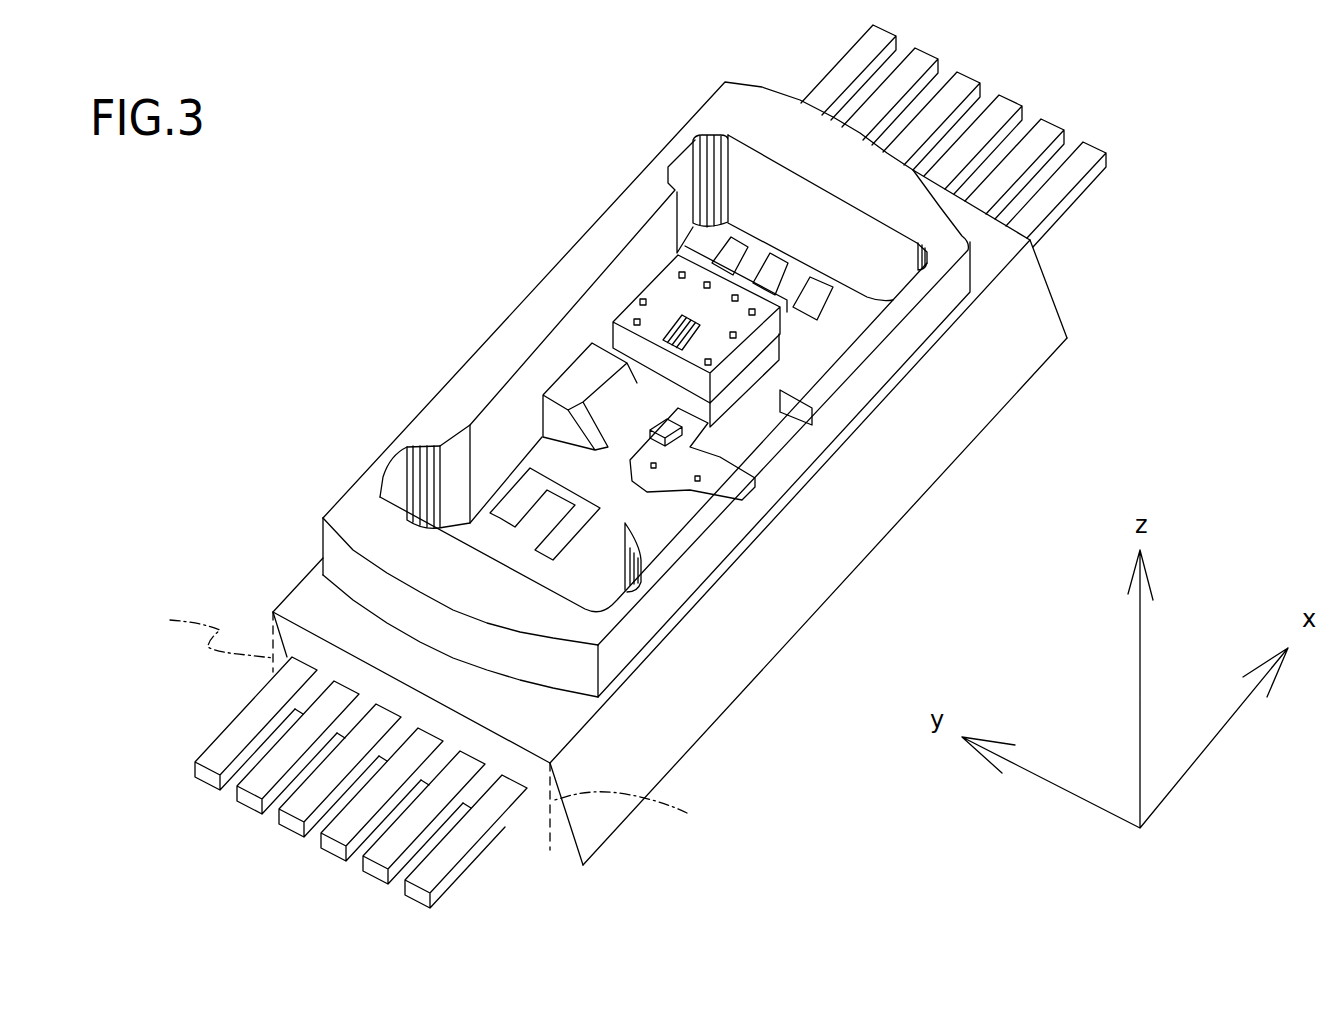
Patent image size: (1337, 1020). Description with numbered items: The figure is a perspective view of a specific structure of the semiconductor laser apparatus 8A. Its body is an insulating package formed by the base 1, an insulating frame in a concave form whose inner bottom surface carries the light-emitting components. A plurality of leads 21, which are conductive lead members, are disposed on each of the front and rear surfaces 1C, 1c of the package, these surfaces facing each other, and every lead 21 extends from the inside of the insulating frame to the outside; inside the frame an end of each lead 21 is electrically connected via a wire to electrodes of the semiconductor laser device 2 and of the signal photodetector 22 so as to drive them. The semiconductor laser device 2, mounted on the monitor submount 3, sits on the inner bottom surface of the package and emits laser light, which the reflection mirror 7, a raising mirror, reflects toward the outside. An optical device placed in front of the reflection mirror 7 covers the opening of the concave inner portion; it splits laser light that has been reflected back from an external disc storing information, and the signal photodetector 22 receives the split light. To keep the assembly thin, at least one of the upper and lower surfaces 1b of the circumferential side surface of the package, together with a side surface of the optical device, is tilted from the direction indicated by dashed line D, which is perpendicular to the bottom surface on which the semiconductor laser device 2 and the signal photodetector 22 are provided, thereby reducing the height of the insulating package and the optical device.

The base 1 is at (632, 475).
The upper and lower surfaces 1b is at (692, 548).
The front and rear surfaces 1C is at (290, 630).
The front and rear surfaces 1c is at (1068, 286).
The lead 21 is at (245, 723).
The signal photodetector 22 is at (672, 303).
The reflection mirror 7 is at (617, 387).
The semiconductor laser apparatus 8A is at (410, 395).
The semiconductor laser device 2 is at (673, 437).
The monitor submount 3 is at (667, 467).
The dashed line D is at (430, 718).